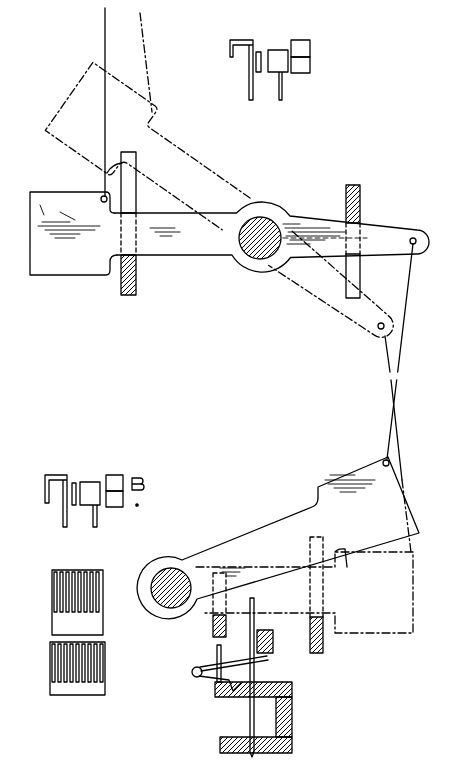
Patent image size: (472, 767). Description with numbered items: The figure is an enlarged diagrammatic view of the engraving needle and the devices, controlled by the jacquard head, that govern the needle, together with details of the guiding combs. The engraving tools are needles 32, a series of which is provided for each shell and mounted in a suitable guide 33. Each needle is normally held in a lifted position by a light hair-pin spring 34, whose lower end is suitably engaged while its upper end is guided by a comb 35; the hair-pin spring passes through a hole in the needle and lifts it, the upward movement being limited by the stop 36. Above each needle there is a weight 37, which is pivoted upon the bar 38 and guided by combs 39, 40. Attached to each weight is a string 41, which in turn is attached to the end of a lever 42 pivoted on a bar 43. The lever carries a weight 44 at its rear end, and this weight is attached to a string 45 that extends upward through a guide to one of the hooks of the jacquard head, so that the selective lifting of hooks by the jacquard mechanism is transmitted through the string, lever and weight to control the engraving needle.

In FIG. 8B, the needle 32 is at (250, 715).
In FIG. 8B, the guide 33 is at (293, 717).
In FIG. 8B, the hair-pin spring 34 is at (207, 680).
In FIG. 8B, the comb 35 is at (105, 670).
In FIG. 8B, the stop 36 is at (273, 650).
In FIG. 8B, the weight 37 is at (240, 540).
In FIG. 8B, the bar 38 is at (165, 578).
In FIG. 8B, the comb 39 is at (222, 601).
In FIG. 8B, the comb 40 is at (317, 601).
In FIG. 8, the string 41 is at (401, 348).
In FIG. 8, the lever 42 is at (398, 233).
In FIG. 8, the bar 43 is at (263, 222).
In FIG. 8, the weight 44 is at (100, 267).
In FIG. 8, the string 45 is at (103, 37).